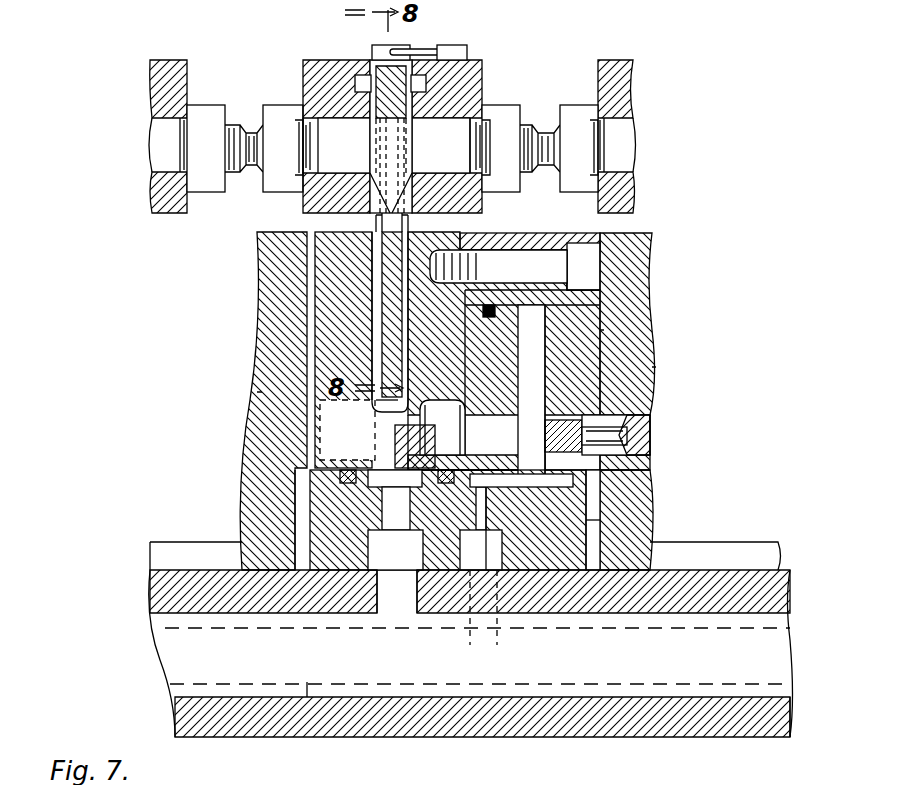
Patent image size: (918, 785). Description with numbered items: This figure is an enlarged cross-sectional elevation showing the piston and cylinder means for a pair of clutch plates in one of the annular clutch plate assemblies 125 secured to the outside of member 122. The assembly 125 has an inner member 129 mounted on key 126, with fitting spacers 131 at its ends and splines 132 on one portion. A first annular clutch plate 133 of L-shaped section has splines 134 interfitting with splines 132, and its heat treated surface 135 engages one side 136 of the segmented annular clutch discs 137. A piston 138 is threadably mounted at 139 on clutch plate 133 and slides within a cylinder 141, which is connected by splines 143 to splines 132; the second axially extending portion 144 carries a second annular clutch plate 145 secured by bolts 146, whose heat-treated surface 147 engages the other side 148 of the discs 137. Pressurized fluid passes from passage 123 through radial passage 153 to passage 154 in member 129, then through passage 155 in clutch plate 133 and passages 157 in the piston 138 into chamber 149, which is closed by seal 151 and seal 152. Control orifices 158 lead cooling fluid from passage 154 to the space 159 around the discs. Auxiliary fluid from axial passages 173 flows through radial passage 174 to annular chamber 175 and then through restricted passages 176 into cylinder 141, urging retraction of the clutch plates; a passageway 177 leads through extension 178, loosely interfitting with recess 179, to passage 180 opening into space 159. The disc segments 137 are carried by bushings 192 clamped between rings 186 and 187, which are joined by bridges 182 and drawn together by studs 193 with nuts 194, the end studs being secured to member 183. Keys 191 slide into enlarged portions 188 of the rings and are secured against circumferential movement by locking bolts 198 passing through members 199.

The member 122 is at (625, 730).
The passage 123 is at (693, 692).
The annular clutch plate assembly 125 is at (250, 396).
The key 126 is at (770, 558).
The inner member 129 is at (600, 527).
The fitting spacers 131 is at (600, 508).
The splines 132 is at (545, 402).
The first annular clutch plate 133 is at (632, 262).
The splines 134 is at (510, 490).
The heat treated surface 135 is at (500, 115).
The side of clutch discs 136 is at (385, 298).
The segmented annular clutch discs 137 is at (405, 235).
The piston 138 is at (543, 352).
The threaded mounting 139 is at (504, 351).
The cylinder 141 is at (528, 308).
The splines 143 is at (603, 500).
The second axially extending portion 144 is at (497, 240).
The second annular clutch plate 145 is at (467, 297).
The bolts 146 is at (580, 262).
The heat-treated surface 147 is at (382, 372).
The other side of clutch discs 148 is at (403, 337).
The chamber 149 is at (440, 458).
The seal 151 is at (347, 431).
The seal 152 is at (500, 305).
The radial passage 153 is at (387, 598).
The passage 154 is at (263, 591).
The passage 155 is at (388, 493).
The passages 157 is at (455, 445).
The control orifices 158 is at (386, 487).
The space 159 is at (400, 410).
The axial passages 173 is at (307, 680).
The radial passage 174 is at (471, 653).
The annular chamber 175 is at (603, 607).
The restricted passages 176 is at (480, 508).
The passageway 177 is at (568, 445).
The extension 178 is at (652, 386).
The recess 179 is at (628, 443).
The passage 180 is at (628, 420).
The bridges 182 is at (545, 128).
The member 183 is at (478, 75).
The ring 186 is at (618, 92).
The ring 187 is at (165, 78).
The enlarged portions 188 is at (312, 70).
The keys 191 is at (376, 78).
The bushings 192 is at (370, 198).
The studs 193 is at (360, 152).
The nuts 194 is at (272, 115).
The locking bolts 198 is at (508, 776).
The members 199 is at (418, 776).